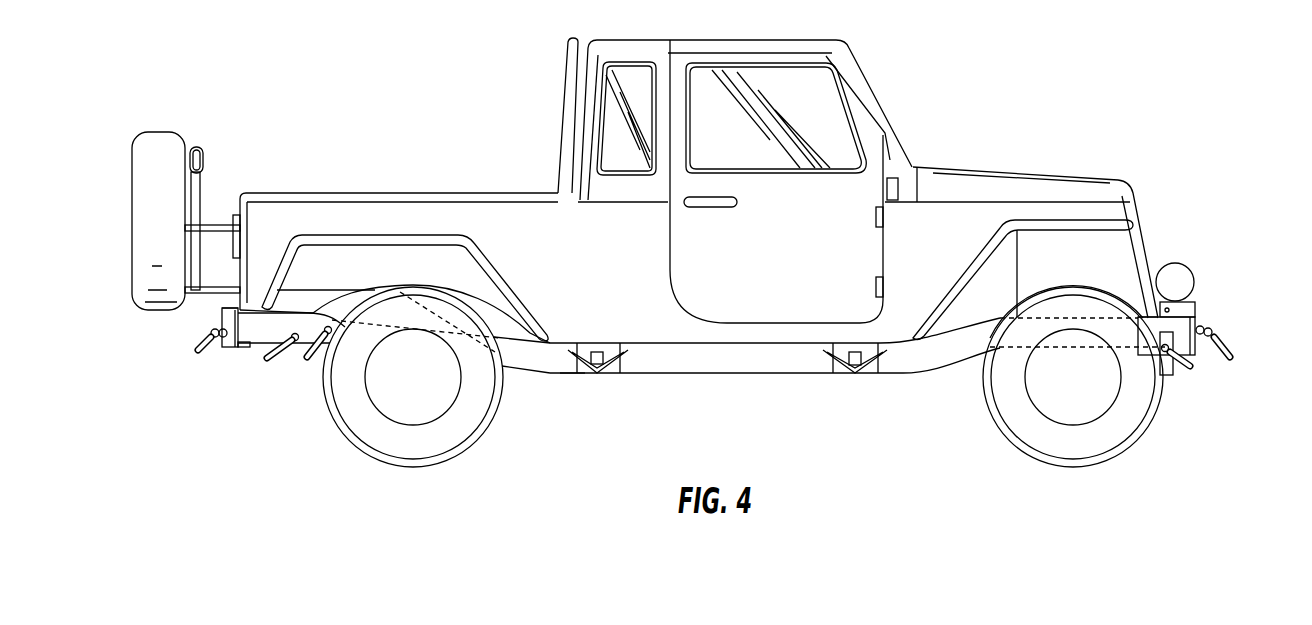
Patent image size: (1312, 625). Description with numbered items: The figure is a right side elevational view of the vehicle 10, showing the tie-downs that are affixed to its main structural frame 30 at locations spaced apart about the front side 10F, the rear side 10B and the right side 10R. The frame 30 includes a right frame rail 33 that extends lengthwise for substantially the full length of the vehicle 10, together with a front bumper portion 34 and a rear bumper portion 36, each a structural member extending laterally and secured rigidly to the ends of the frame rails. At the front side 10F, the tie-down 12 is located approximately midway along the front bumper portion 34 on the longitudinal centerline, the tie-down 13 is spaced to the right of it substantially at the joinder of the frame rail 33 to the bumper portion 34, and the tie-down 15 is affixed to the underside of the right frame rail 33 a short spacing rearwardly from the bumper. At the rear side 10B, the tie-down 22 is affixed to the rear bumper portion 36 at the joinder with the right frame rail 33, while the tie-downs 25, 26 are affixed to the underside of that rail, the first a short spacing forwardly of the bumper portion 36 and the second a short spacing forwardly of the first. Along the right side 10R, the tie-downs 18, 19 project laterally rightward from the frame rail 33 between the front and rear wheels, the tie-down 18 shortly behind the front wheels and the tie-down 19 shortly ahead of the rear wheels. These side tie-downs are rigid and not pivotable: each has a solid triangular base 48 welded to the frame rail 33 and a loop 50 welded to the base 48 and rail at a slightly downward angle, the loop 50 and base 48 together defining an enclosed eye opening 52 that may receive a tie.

The vehicle 10 is at (968, 109).
The rear side 10B is at (101, 281).
The front side 10F is at (1247, 279).
The right side 10R is at (572, 396).
The tie-down 12 is at (1231, 354).
The tie-down 13 is at (1222, 330).
The tie-down 15 is at (1192, 368).
The tie-down 18 is at (870, 375).
The tie-down 19 is at (590, 376).
The tie-down 22 is at (212, 349).
The tie-down 25 is at (272, 356).
The tie-down 26 is at (312, 342).
The main structural frame 30 is at (541, 352).
The right frame rail 33 is at (737, 353).
The front bumper portion 34 is at (1196, 322).
The rear bumper portion 36 is at (213, 321).
The triangular base 48 is at (848, 340).
The loop 50 is at (842, 376).
The eye opening 52 is at (858, 350).